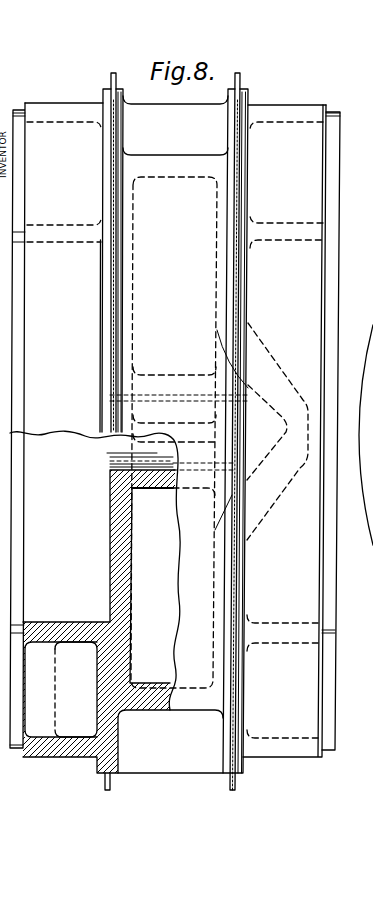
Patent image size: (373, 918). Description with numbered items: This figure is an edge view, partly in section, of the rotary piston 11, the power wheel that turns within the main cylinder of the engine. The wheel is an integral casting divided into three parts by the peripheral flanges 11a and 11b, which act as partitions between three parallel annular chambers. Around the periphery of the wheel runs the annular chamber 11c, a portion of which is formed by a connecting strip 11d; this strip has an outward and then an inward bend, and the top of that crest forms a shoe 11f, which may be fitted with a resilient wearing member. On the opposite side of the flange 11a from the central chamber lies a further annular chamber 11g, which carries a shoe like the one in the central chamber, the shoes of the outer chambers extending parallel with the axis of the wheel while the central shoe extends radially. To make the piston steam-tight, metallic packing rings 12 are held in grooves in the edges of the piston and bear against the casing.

The rotary piston 11 is at (313, 180).
The peripheral flange 11a is at (103, 86).
The peripheral flange 11b is at (308, 83).
The annular chamber 11c is at (192, 139).
The connecting strip 11d is at (143, 688).
The shoe 11f is at (298, 500).
The annular chamber 11g is at (78, 790).
The metallic packing ring 12 is at (44, 95).